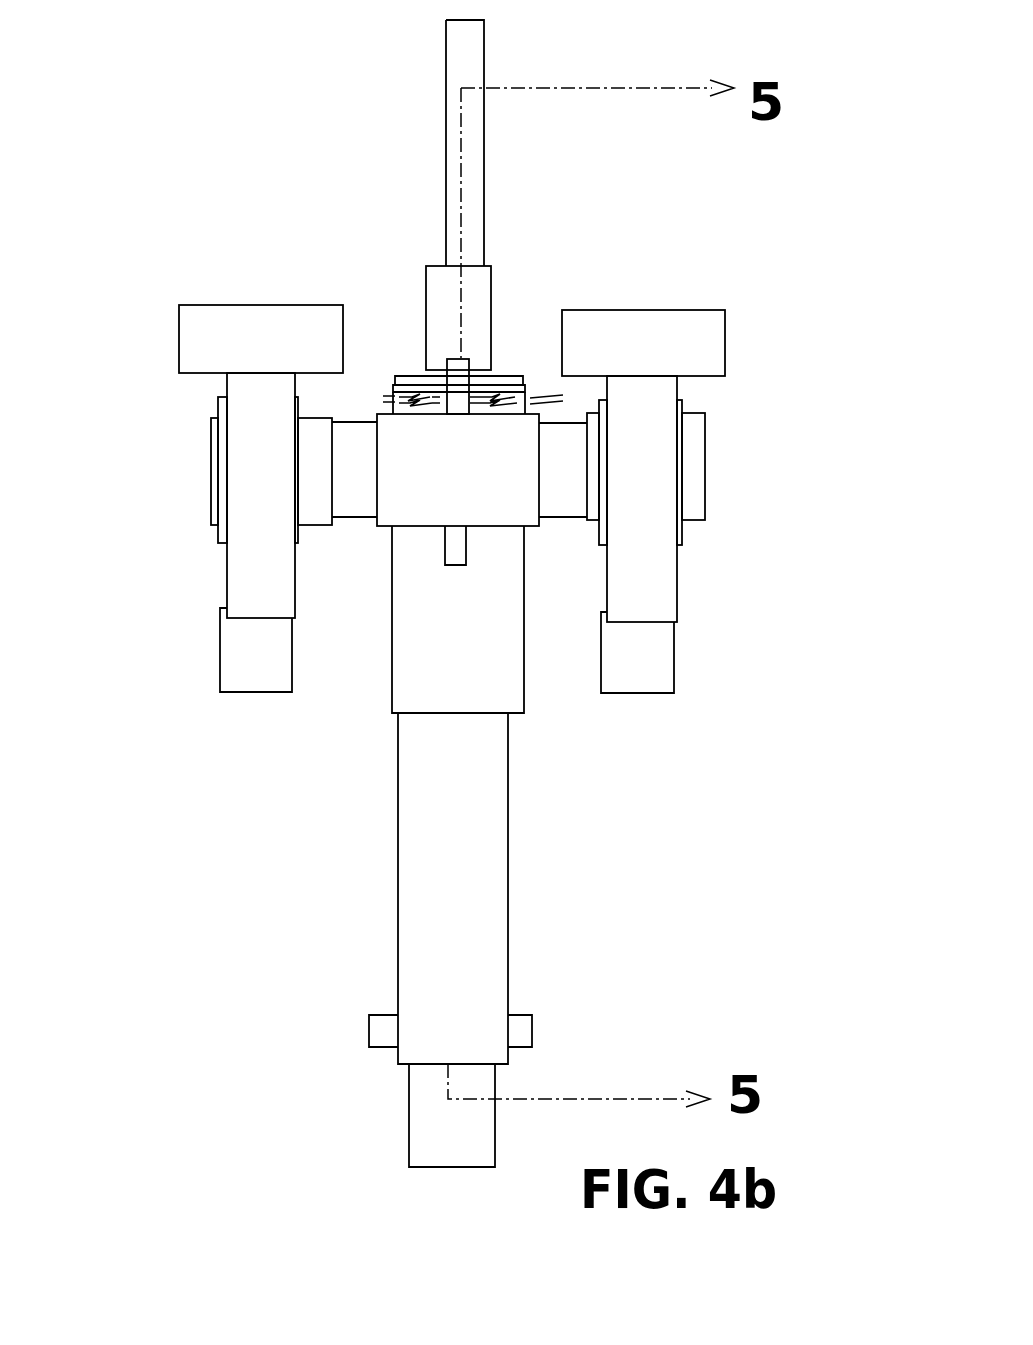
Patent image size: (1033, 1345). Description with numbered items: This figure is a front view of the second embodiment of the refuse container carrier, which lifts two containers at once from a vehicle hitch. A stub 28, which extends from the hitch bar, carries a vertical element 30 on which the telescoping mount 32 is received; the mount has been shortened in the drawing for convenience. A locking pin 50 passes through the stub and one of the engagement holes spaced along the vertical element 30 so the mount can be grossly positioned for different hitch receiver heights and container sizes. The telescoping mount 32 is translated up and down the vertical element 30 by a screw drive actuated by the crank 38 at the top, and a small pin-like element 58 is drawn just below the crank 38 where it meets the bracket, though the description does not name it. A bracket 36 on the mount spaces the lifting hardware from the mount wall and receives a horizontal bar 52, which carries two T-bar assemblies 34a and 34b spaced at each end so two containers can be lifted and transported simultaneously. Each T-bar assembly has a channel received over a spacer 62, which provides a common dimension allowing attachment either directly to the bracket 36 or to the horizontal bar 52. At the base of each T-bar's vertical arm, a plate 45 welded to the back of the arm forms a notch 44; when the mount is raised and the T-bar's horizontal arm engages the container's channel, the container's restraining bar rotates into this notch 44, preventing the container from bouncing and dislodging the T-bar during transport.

The stub 28 is at (437, 1118).
The vertical element 30 is at (508, 910).
The telescoping mount 32 is at (422, 672).
The T-bar assembly 34a is at (263, 460).
The T-bar assembly 34b is at (653, 472).
The bracket 36 is at (483, 478).
The crank 38 is at (468, 290).
The notch 44 is at (258, 620).
The plate 45 is at (270, 672).
The locking pin 50 is at (368, 1030).
The horizontal bar 52 is at (347, 457).
The pin 58 is at (458, 380).
The spacer 62 is at (316, 503).